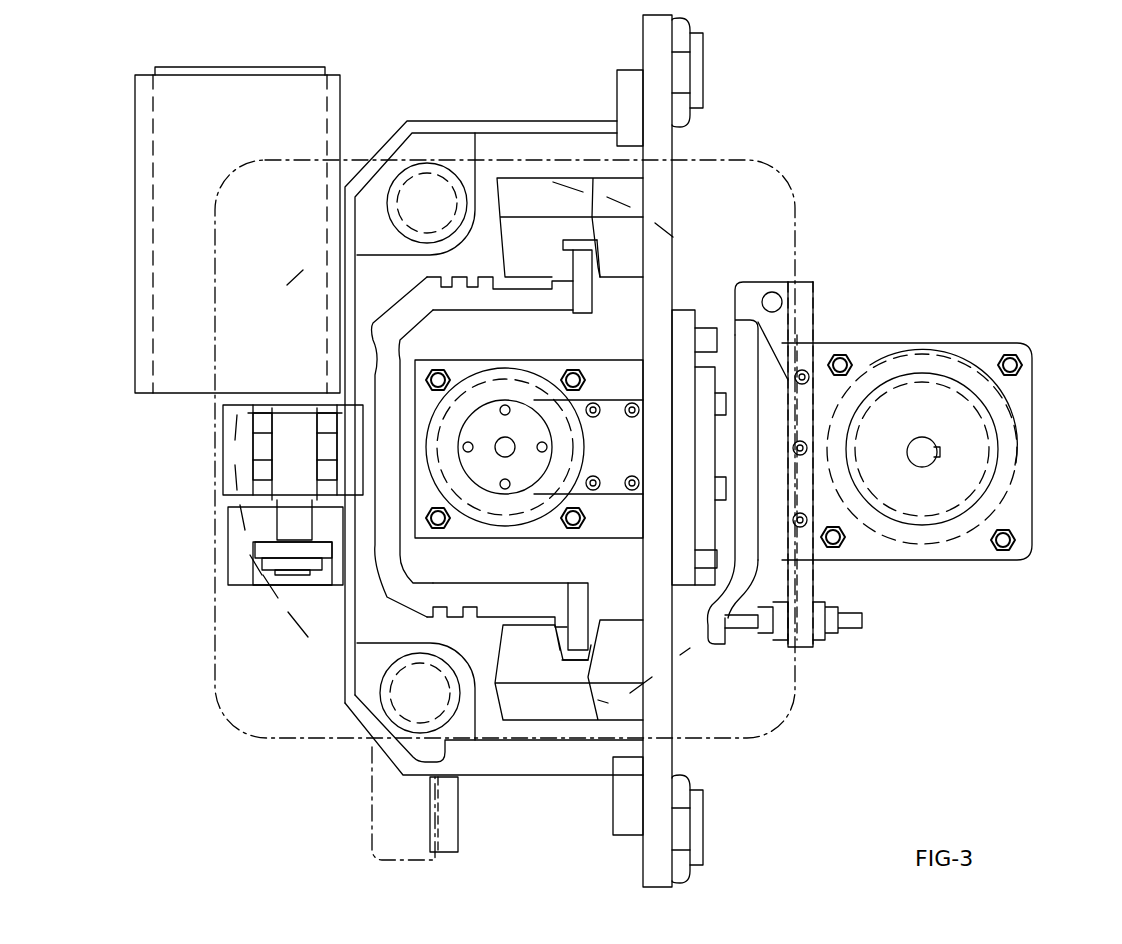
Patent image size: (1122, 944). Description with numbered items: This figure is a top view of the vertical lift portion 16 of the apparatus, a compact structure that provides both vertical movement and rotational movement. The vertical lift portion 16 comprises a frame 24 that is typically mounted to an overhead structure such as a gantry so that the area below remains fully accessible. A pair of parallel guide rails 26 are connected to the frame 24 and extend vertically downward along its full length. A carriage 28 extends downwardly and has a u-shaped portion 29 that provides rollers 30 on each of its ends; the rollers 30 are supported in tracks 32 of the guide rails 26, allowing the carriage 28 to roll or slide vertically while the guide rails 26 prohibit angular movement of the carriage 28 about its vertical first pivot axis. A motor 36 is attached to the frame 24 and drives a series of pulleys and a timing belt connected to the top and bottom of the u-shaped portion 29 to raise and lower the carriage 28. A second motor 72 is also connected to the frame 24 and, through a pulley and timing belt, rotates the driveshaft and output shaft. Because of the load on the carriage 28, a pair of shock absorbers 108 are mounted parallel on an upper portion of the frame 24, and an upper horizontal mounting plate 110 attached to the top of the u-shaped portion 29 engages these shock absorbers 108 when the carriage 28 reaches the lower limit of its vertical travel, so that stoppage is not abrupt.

The vertical lift portion 16 is at (862, 142).
The frame 24 is at (666, 755).
The guide rails 26 is at (527, 225).
The carriage 28 is at (380, 283).
The u-shaped portion 29 is at (400, 573).
The rollers 30 is at (578, 297).
The tracks 32 is at (595, 273).
The motor 36 is at (173, 258).
The second motor 72 is at (997, 493).
The shock absorbers 108 is at (417, 183).
The upper horizontal mounting plate 110 is at (782, 716).